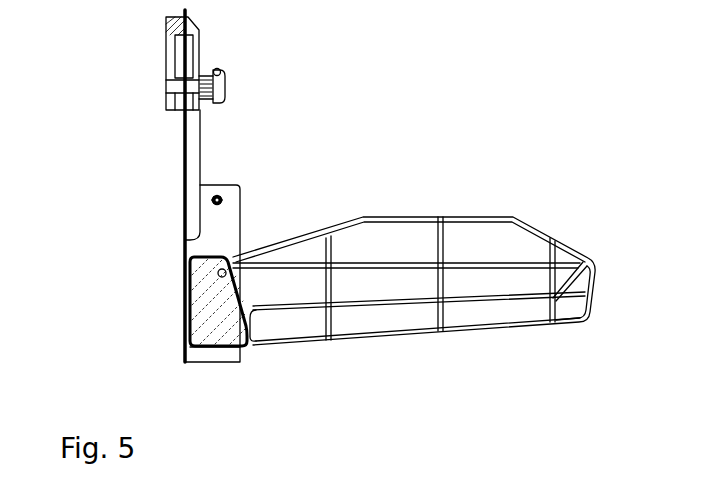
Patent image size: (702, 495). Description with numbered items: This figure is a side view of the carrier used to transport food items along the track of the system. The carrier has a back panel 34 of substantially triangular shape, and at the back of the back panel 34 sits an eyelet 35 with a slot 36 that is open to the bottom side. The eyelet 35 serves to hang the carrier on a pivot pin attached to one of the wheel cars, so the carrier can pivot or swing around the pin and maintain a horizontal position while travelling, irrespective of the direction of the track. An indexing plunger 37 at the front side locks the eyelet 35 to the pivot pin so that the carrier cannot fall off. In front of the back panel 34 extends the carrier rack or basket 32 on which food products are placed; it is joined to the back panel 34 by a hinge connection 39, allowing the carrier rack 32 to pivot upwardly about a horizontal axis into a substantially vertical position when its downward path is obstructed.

The carrier rack or basket 32 is at (498, 210).
The back panel 34 is at (183, 147).
The eyelet 35 is at (165, 25).
The slot 36 is at (165, 75).
The indexing plunger 37 is at (225, 72).
The hinge connection 39 is at (208, 271).